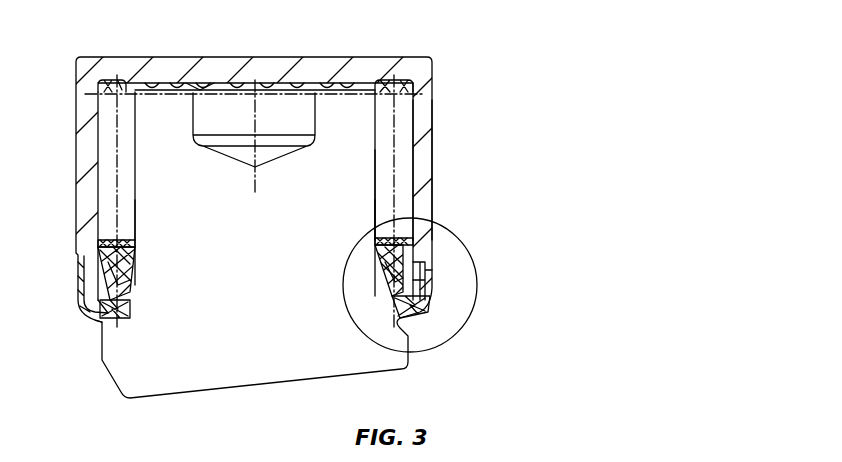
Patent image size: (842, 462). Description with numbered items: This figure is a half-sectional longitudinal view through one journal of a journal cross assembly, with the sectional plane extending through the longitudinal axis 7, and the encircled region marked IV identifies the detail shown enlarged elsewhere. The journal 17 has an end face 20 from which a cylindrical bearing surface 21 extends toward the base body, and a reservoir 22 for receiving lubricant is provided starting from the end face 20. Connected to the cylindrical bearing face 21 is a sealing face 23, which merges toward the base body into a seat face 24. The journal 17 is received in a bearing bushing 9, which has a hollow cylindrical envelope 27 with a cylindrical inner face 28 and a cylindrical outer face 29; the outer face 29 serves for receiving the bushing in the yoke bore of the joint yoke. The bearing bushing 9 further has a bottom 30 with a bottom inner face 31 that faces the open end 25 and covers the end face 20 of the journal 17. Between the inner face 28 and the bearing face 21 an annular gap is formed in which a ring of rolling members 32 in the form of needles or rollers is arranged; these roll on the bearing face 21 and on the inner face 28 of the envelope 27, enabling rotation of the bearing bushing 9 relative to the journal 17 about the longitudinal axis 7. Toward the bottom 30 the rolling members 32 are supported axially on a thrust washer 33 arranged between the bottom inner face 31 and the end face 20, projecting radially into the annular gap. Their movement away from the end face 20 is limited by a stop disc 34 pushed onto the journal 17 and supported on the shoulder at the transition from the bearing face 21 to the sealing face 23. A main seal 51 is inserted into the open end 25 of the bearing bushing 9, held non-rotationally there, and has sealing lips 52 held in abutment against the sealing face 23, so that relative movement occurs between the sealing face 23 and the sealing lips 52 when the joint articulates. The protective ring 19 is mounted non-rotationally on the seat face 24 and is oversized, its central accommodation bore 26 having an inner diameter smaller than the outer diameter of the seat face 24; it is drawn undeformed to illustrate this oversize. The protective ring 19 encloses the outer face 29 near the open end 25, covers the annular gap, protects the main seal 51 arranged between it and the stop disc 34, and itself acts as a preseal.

The longitudinal axis 7 is at (255, 191).
The bearing bushing 9 is at (436, 120).
The journal 17 is at (255, 278).
The protective ring 19 is at (432, 290).
The end face 20 is at (352, 87).
The cylindrical bearing surface 21 is at (378, 110).
The reservoir 22 is at (196, 103).
The sealing face 23 is at (405, 262).
The seat face 24 is at (428, 310).
The open end 25 is at (94, 341).
The central accommodation bore 26 is at (122, 305).
The hollow cylindrical envelope 27 is at (423, 157).
The cylindrical inner face 28 is at (383, 181).
The cylindrical outer face 29 is at (433, 177).
The bottom 30 is at (193, 84).
The bottom inner face 31 is at (150, 88).
The rolling members 32 is at (384, 127).
The thrust washer 33 is at (123, 85).
The stop disc 34 is at (136, 245).
The main seal 51 is at (105, 260).
The sealing lips 52 is at (112, 262).
The detail view marker IV is at (452, 343).